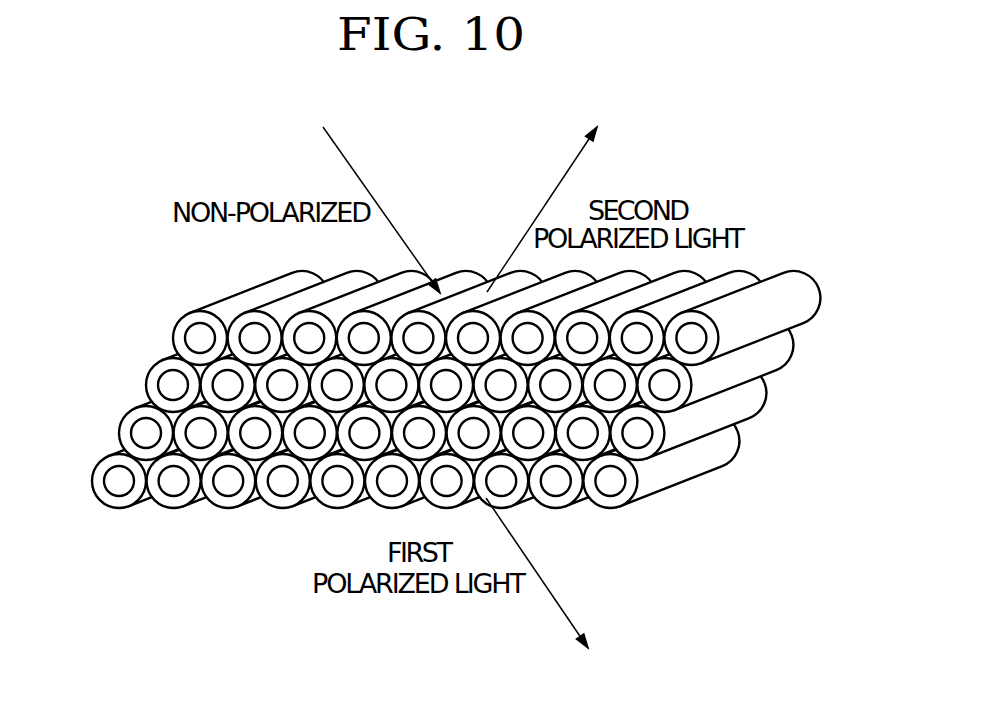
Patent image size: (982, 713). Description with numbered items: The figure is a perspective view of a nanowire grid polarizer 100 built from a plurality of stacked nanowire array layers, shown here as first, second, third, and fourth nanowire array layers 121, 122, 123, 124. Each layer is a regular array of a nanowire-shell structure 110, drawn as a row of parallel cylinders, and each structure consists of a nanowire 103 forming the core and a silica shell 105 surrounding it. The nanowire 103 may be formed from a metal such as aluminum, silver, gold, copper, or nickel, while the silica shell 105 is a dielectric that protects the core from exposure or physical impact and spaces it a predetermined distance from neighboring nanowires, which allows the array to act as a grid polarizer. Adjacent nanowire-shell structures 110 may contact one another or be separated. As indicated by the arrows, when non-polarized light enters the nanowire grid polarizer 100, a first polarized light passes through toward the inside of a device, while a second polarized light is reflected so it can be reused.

The nanowire grid polarizer 100 is at (444, 363).
The nanowire 103 is at (618, 487).
The silica shell 105 is at (688, 470).
The nanowire-shell structure 110 is at (705, 484).
The first nanowire array layer 121 is at (425, 484).
The second nanowire array layer 122 is at (109, 414).
The third nanowire array layer 123 is at (136, 366).
The fourth nanowire array layer 124 is at (162, 318).